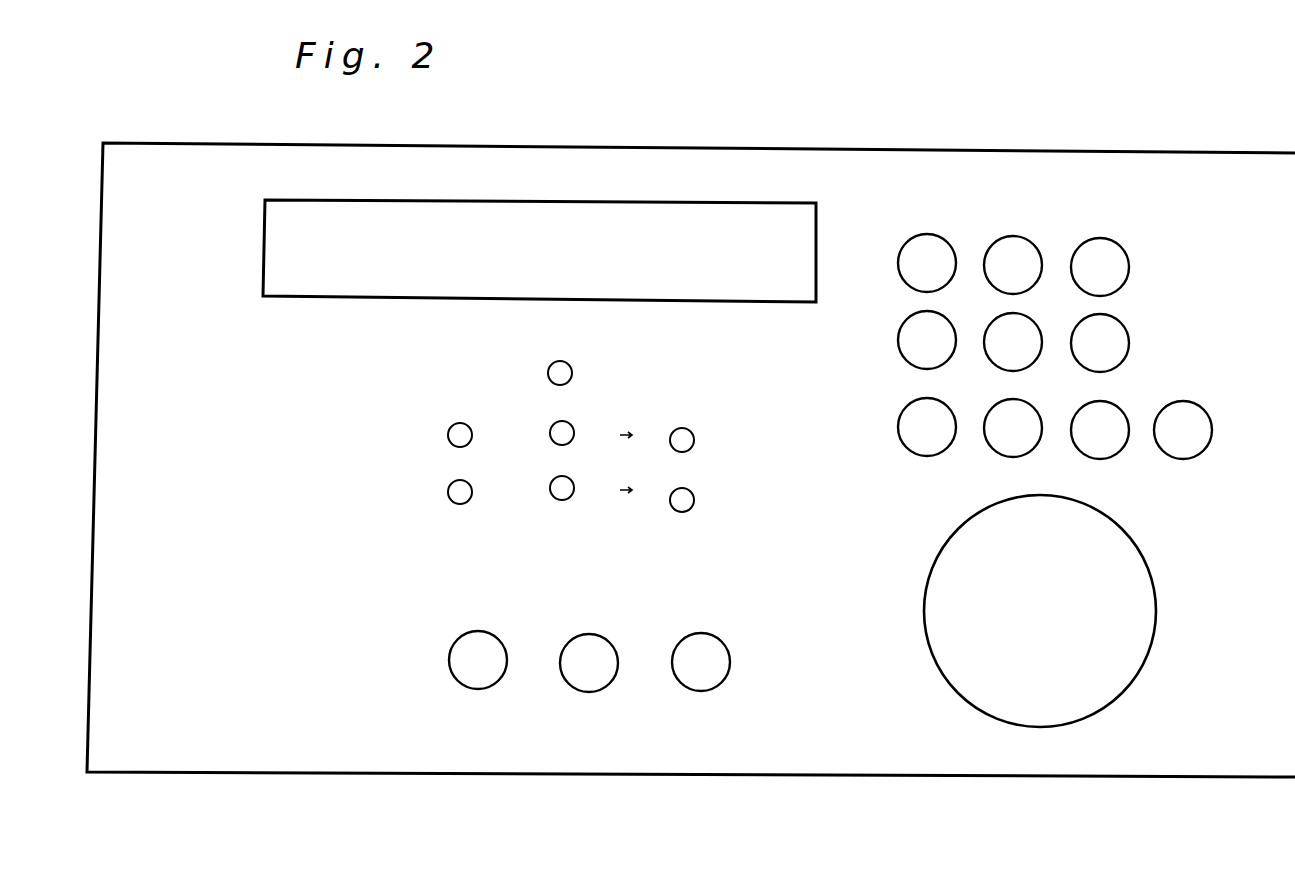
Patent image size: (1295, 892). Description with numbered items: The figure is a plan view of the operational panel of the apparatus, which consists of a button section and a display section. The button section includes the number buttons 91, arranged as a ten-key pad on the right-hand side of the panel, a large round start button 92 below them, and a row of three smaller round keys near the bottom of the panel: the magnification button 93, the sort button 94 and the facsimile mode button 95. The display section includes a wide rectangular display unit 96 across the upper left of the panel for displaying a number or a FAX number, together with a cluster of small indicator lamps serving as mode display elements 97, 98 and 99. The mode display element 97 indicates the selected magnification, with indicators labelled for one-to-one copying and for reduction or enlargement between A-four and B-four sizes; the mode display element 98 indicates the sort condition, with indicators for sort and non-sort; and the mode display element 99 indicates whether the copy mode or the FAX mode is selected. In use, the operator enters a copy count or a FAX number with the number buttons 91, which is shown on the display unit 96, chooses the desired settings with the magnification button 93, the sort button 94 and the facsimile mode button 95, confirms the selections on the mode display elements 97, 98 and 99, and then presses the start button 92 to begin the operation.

The number buttons 91 is at (1145, 348).
The start button 92 is at (1098, 708).
The magnification button 93 is at (590, 693).
The sort button 94 is at (480, 690).
The facsimile mode button 95 is at (705, 691).
The display unit 96 is at (805, 218).
The mode display element for magnification 97 is at (585, 350).
The mode display element for sort 98 is at (472, 408).
The mode display element for copy/FAX 99 is at (695, 417).